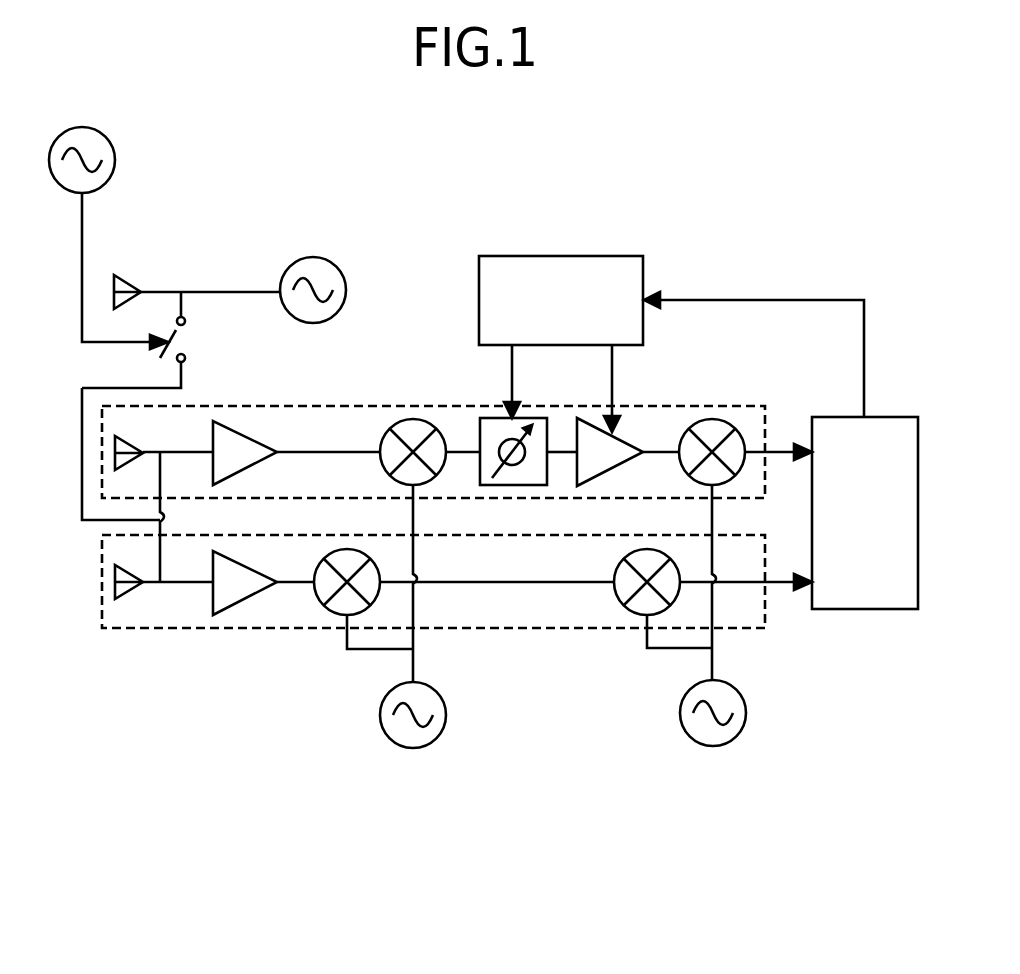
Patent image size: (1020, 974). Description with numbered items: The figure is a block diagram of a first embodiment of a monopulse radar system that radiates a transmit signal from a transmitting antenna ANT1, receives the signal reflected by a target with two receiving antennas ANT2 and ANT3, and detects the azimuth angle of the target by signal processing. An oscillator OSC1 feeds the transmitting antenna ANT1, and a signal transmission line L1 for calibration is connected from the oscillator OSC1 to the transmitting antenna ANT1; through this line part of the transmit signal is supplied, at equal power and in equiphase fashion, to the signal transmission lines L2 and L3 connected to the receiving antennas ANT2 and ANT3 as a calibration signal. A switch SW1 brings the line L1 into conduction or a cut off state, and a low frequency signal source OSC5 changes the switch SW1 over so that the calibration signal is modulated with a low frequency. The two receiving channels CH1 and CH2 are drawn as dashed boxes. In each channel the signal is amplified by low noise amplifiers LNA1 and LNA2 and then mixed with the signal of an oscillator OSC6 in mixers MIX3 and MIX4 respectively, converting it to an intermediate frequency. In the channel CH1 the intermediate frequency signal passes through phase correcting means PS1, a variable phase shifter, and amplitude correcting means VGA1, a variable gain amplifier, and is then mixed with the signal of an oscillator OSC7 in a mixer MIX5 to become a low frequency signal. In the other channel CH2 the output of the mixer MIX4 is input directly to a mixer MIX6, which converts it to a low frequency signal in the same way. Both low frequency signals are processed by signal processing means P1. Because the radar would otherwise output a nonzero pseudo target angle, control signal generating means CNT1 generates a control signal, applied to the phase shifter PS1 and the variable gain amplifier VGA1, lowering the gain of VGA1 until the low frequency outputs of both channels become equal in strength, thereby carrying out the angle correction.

The low frequency signal source OSC5 is at (85, 127).
The transmitting antenna ANT1 is at (122, 274).
The oscillator OSC1 is at (318, 257).
The switch SW1 is at (184, 328).
The control signal generating means CNT1 is at (596, 256).
The channel CH1 is at (768, 404).
The channel CH2 is at (770, 630).
The signal transmission line for calibration L1 is at (80, 495).
The signal transmission line L2 is at (151, 454).
The signal transmission line L3 is at (178, 586).
The receiving antenna ANT2 is at (128, 449).
The receiving antenna ANT3 is at (120, 602).
The low noise amplifier LNA1 is at (258, 439).
The low noise amplifier LNA2 is at (232, 617).
The mixer MIX3 is at (408, 420).
The mixer MIX4 is at (326, 616).
The mixer MIX5 is at (712, 418).
The mixer MIX6 is at (625, 615).
The phase correcting means PS1 is at (494, 418).
The amplitude correcting means VGA1 is at (635, 421).
The signal processing means P1 is at (870, 610).
The oscillator OSC6 is at (413, 748).
The oscillator OSC7 is at (713, 746).